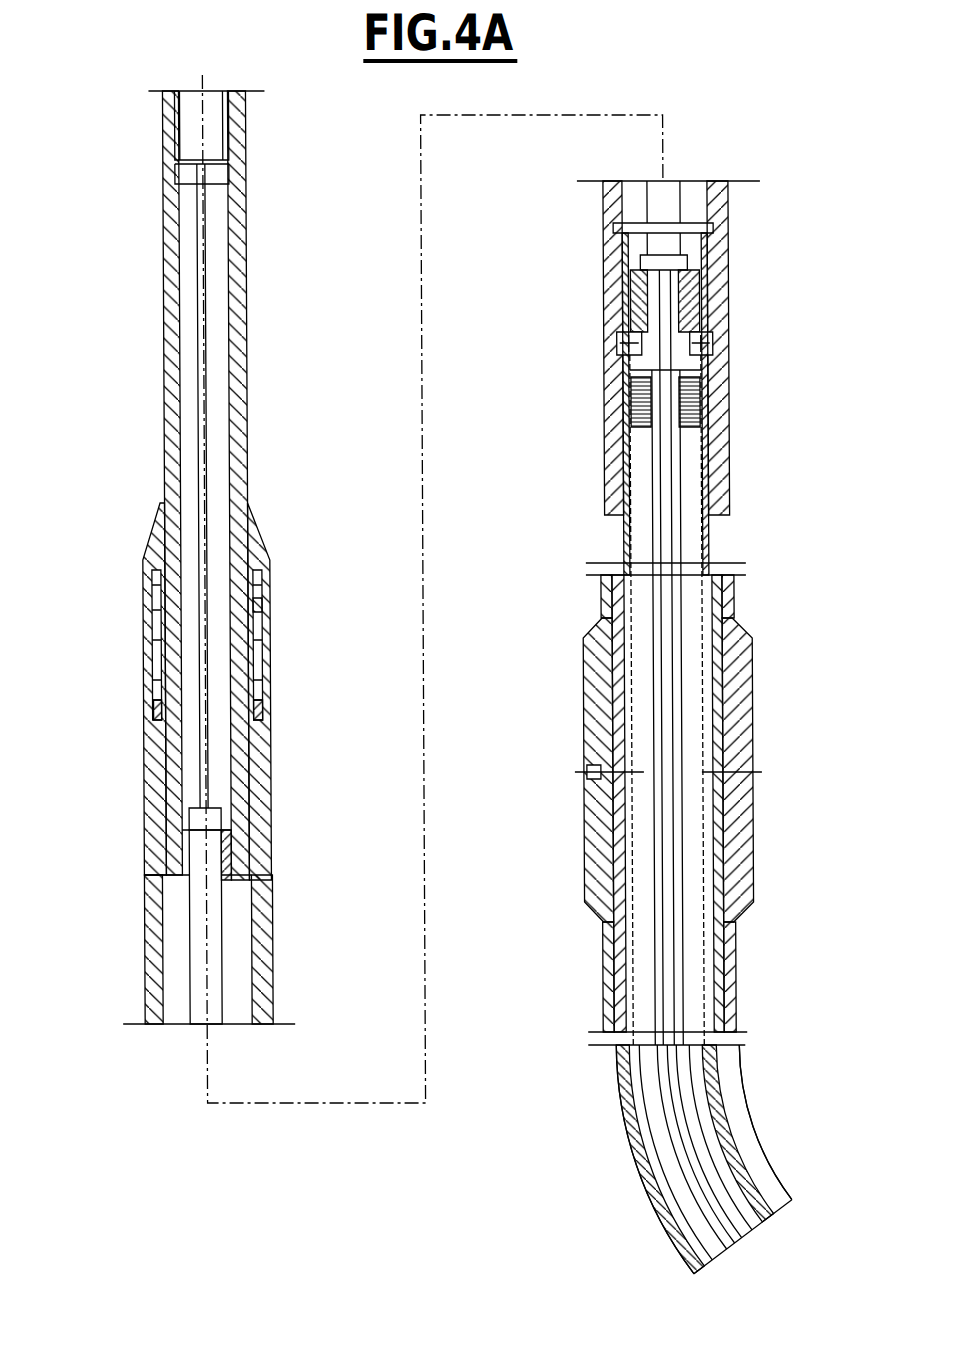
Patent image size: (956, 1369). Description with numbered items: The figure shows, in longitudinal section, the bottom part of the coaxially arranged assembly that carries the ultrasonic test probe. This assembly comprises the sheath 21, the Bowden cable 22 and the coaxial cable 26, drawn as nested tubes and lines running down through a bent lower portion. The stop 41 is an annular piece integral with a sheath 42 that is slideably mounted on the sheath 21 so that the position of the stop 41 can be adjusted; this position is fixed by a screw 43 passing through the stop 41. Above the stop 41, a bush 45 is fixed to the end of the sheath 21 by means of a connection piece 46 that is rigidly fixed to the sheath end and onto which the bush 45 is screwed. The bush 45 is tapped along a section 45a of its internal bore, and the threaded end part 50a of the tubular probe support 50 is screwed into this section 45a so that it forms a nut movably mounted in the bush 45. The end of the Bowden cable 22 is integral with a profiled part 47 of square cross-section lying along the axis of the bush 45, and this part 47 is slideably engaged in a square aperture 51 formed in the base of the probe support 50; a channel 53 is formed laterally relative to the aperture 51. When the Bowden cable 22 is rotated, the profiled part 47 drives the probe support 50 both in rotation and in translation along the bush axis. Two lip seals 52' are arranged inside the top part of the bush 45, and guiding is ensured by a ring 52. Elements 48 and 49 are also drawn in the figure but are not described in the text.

The probe support 50 is at (165, 262).
The ring 52 is at (166, 691).
The lip seals 52' is at (300, 604).
The aperture 51 is at (185, 855).
The threaded part 50a is at (163, 857).
The channel 53 is at (235, 880).
The tapped section 45a is at (165, 978).
The bush 45 is at (267, 982).
The profiled part 47 is at (200, 1010).
The spring housing 48 is at (630, 375).
The ball 49 is at (620, 346).
The connection piece 46 is at (712, 347).
The coaxial cable 26 is at (675, 993).
The sheath 21 is at (718, 550).
The sheath 42 is at (605, 946).
The stop 41 is at (588, 860).
The screw 43 is at (590, 772).
The Bowden cable 22 is at (670, 1165).